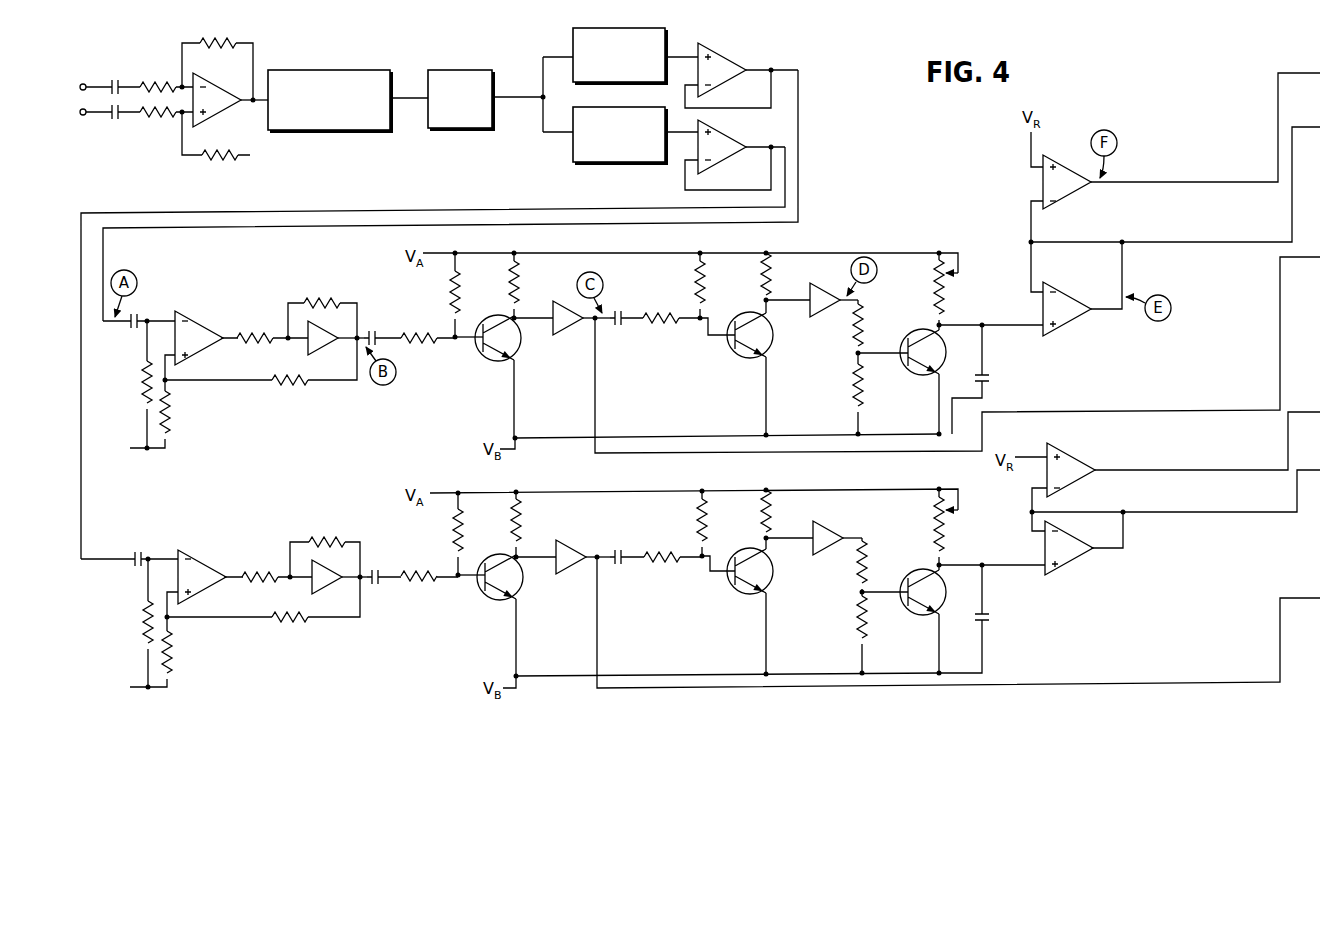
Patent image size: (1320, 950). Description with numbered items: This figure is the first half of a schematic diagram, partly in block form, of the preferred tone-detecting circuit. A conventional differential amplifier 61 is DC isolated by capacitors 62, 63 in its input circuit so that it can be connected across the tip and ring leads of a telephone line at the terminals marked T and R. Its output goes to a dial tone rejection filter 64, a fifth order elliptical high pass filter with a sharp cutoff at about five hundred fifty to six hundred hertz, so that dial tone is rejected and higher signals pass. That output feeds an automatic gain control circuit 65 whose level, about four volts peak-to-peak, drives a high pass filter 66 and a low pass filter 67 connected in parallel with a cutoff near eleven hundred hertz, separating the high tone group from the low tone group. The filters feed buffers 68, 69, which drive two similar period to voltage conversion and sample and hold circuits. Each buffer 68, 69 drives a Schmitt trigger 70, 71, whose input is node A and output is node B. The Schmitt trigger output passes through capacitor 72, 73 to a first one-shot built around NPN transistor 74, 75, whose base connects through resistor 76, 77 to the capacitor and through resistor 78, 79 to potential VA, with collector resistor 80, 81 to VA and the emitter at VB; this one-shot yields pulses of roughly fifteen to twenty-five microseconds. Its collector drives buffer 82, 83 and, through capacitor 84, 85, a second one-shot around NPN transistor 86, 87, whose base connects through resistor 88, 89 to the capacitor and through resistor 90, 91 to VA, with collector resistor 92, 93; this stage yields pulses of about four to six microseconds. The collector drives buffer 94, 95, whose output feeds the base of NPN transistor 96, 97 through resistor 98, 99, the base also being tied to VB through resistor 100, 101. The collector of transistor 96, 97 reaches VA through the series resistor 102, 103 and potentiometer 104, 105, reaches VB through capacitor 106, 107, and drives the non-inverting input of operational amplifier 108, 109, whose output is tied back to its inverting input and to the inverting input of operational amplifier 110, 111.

The differential amplifier 61 is at (168, 29).
The capacitor 62 is at (129, 54).
The capacitor 63 is at (117, 117).
The dial tone rejection filter 64 is at (318, 70).
The automatic gain control circuit 65 is at (458, 70).
The high pass filter 66 is at (573, 43).
The low pass filter 67 is at (573, 141).
The buffer 68 is at (721, 50).
The buffer 69 is at (744, 146).
The Schmitt trigger 70 is at (293, 401).
The Schmitt trigger 71 is at (303, 658).
The capacitor 72 is at (389, 310).
The capacitor 73 is at (394, 551).
The NPN transistor 74 is at (494, 352).
The NPN transistor 75 is at (494, 610).
The resistor 76 is at (412, 343).
The resistor 77 is at (410, 583).
The resistor 78 is at (449, 287).
The resistor 79 is at (453, 525).
The resistor 80 is at (518, 289).
The resistor 81 is at (525, 530).
The buffer 82 is at (570, 333).
The buffer 83 is at (575, 581).
The capacitor 84 is at (624, 326).
The capacitor 85 is at (624, 567).
The NPN transistor 86 is at (747, 353).
The NPN transistor 87 is at (747, 605).
The resistor 88 is at (669, 310).
The resistor 89 is at (669, 548).
The resistor 90 is at (705, 282).
The resistor 91 is at (707, 519).
The resistor 92 is at (771, 282).
The resistor 93 is at (773, 518).
The buffer 94 is at (814, 315).
The buffer 95 is at (819, 553).
The NPN transistor 96 is at (919, 330).
The NPN transistor 97 is at (927, 571).
The resistor 98 is at (853, 327).
The resistor 99 is at (861, 569).
The resistor 100 is at (854, 392).
The resistor 101 is at (856, 635).
The resistor 102 is at (944, 314).
The resistor 103 is at (947, 540).
The potentiometer 104 is at (935, 268).
The potentiometer 105 is at (940, 505).
The capacitor 106 is at (987, 378).
The capacitor 107 is at (989, 617).
The operational amplifier 108 is at (1069, 290).
The operational amplifier 109 is at (1068, 563).
The operational amplifier 110 is at (1081, 191).
The operational amplifier 111 is at (1080, 457).